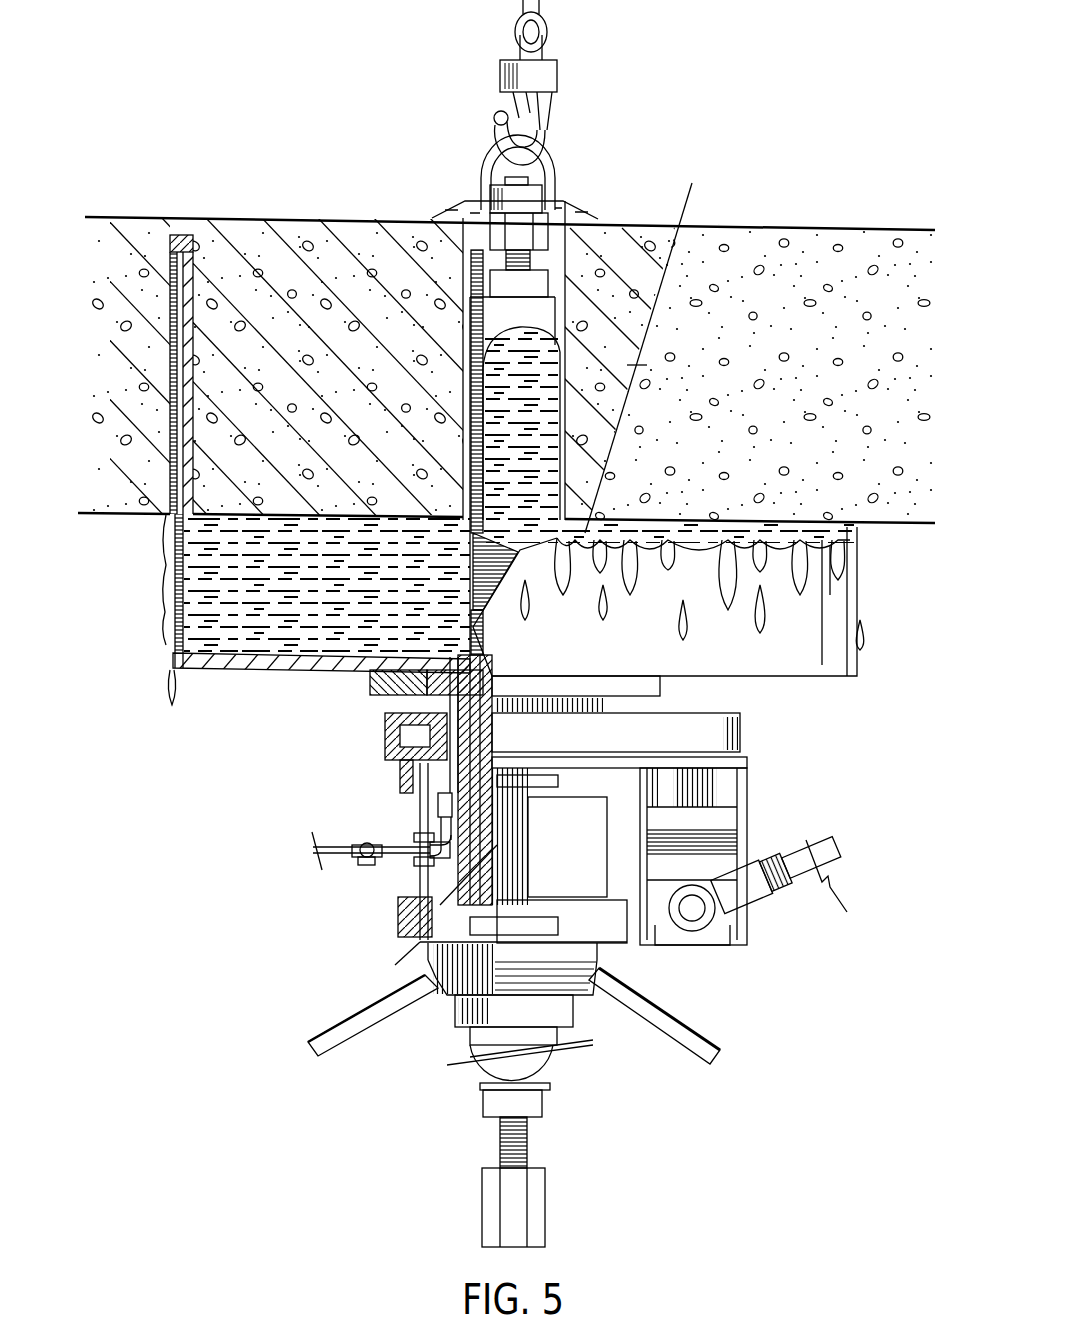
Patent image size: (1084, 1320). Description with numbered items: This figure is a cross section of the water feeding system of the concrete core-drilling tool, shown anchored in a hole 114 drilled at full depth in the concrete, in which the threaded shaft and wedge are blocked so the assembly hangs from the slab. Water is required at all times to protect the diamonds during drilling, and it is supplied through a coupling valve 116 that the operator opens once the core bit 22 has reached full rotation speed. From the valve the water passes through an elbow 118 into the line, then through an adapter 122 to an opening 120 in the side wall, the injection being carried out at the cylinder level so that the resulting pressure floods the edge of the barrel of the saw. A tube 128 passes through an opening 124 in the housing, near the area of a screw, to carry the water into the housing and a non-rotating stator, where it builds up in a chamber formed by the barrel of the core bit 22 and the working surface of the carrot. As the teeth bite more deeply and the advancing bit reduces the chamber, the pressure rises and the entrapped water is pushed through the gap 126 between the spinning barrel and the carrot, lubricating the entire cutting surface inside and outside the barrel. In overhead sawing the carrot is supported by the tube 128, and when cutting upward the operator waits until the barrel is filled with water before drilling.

The core bit 22 is at (190, 660).
The hole 114 is at (567, 315).
The coupling valve 116 is at (363, 847).
The pipe elbow 118 is at (410, 853).
The opening 120 is at (418, 838).
The adapter 122 is at (440, 800).
The opening 124 is at (433, 707).
The gap 126 is at (170, 218).
The tube 128 is at (545, 163).